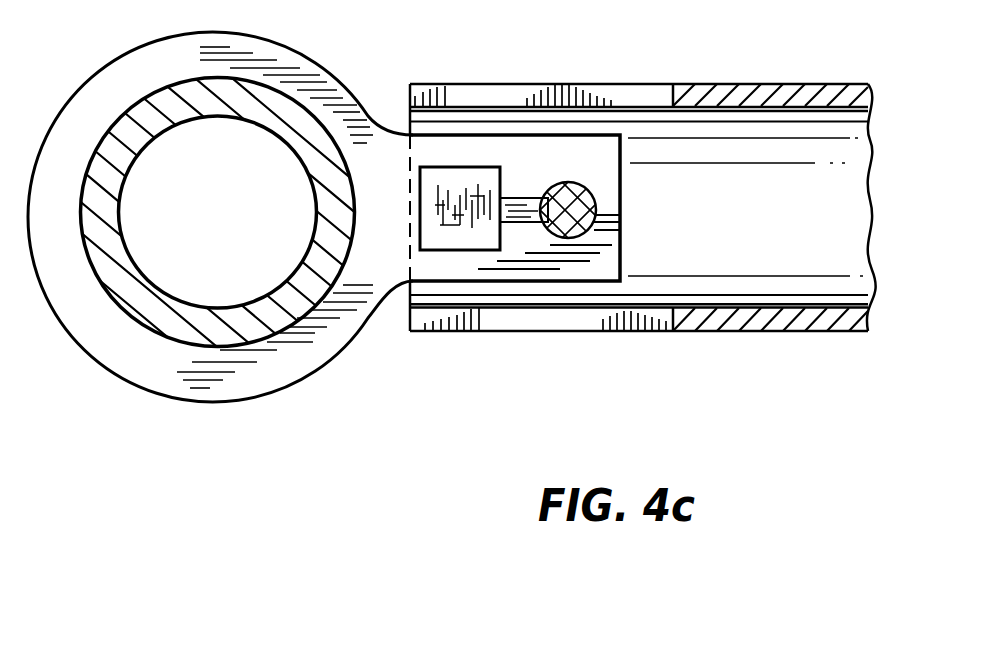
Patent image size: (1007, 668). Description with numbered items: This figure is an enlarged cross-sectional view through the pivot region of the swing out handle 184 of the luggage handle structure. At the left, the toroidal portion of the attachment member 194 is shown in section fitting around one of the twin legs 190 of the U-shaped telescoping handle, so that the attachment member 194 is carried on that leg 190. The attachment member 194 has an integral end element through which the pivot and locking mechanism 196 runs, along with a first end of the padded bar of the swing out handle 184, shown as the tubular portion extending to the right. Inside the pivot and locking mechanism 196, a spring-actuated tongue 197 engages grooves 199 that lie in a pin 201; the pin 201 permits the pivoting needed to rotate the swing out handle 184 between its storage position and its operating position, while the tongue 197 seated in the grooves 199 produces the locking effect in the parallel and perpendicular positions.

The swing out handle 184 is at (756, 342).
The leg of the U-shaped telescoping handle 190 is at (212, 218).
The attachment member 194 is at (135, 320).
The pivot and locking mechanism 196 is at (663, 205).
The spring-actuated tongue 197 is at (521, 199).
The grooves 199 is at (592, 188).
The pin 201 is at (605, 212).